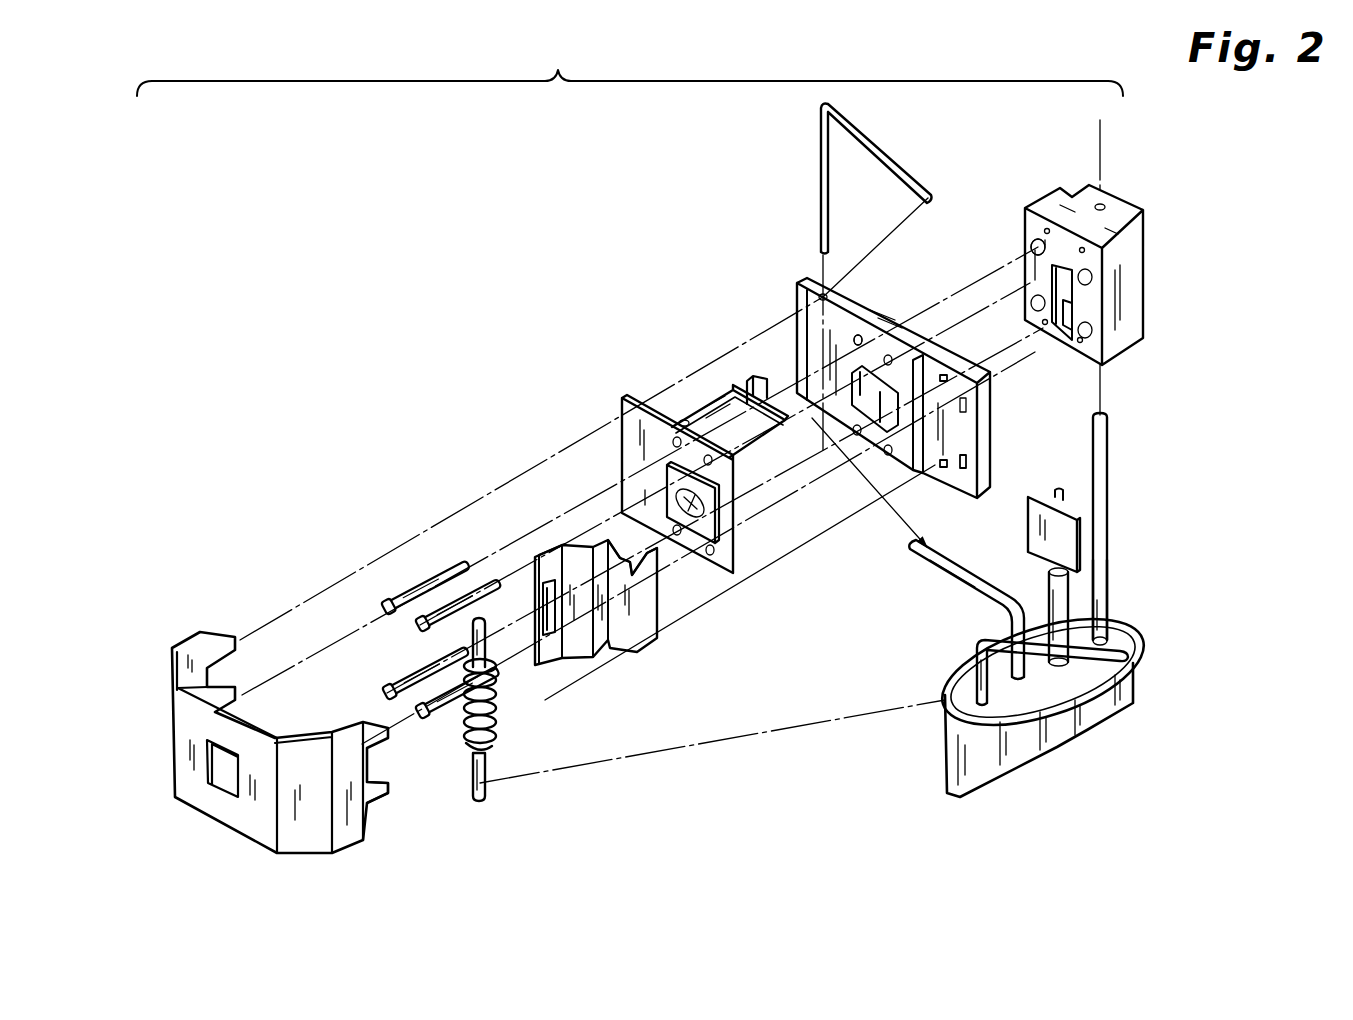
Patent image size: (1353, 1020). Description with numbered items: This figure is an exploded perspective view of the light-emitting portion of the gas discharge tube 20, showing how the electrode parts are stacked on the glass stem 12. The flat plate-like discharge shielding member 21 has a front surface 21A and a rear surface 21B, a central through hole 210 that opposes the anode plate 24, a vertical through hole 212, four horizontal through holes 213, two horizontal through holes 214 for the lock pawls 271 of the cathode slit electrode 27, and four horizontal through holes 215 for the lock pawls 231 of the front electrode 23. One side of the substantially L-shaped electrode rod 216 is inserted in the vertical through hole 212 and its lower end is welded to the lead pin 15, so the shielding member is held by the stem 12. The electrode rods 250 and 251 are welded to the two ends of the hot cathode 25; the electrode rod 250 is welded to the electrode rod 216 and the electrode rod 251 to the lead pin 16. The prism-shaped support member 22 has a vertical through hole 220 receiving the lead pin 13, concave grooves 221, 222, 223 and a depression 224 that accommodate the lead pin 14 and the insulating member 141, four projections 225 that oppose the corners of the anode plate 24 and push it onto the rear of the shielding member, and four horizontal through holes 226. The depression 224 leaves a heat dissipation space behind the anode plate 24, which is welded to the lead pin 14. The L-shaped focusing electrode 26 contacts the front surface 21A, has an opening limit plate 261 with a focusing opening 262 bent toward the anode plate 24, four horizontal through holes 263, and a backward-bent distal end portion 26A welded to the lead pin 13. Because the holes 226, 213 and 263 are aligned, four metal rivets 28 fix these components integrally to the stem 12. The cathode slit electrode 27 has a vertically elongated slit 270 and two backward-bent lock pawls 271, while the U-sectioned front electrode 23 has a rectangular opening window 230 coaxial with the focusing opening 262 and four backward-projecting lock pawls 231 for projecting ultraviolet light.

The gas discharge tube 20 is at (630, 66).
The discharge shielding member 21 is at (805, 280).
The front surface 21A is at (822, 322).
The rear surface 21B is at (887, 303).
The through hole 210 is at (856, 338).
The vertical through hole 212 is at (822, 295).
The horizontal through holes 213 is at (856, 370).
The horizontal through holes 214 is at (940, 465).
The horizontal through holes 215 is at (967, 407).
The electrode rod 216 is at (888, 143).
The support member 22 is at (1130, 201).
The vertical through hole 220 is at (1095, 203).
The concave groove 221 is at (1067, 277).
The concave groove 222 is at (1065, 312).
The concave groove 223 is at (1065, 347).
The depression 224 is at (1072, 287).
The projections 225 is at (1040, 240).
The horizontal through holes 226 is at (1045, 228).
The front electrode 23 is at (295, 853).
The opening window 230 is at (231, 780).
The lock pawls 231 is at (377, 800).
The anode plate 24 is at (1082, 547).
The hot cathode 25 is at (533, 722).
The electrode rod 250 is at (487, 622).
The electrode rod 251 is at (485, 793).
The focusing electrode 26 is at (620, 420).
The distal end portion 26A is at (750, 398).
The opening limit plate 261 is at (1043, 240).
The focusing opening 262 is at (718, 520).
The horizontal through holes 263 is at (684, 420).
The cathode slit electrode 27 is at (603, 650).
The slit 270 is at (543, 632).
The lock pawls 271 is at (650, 567).
The metal rivets 28 is at (430, 592).
The glass stem 12 is at (1138, 623).
The lead pin 13 is at (1105, 592).
The lead pin 14 is at (1056, 496).
The insulating member 141 is at (1048, 592).
The lead pin 15 is at (962, 587).
The lead pin 16 is at (973, 660).